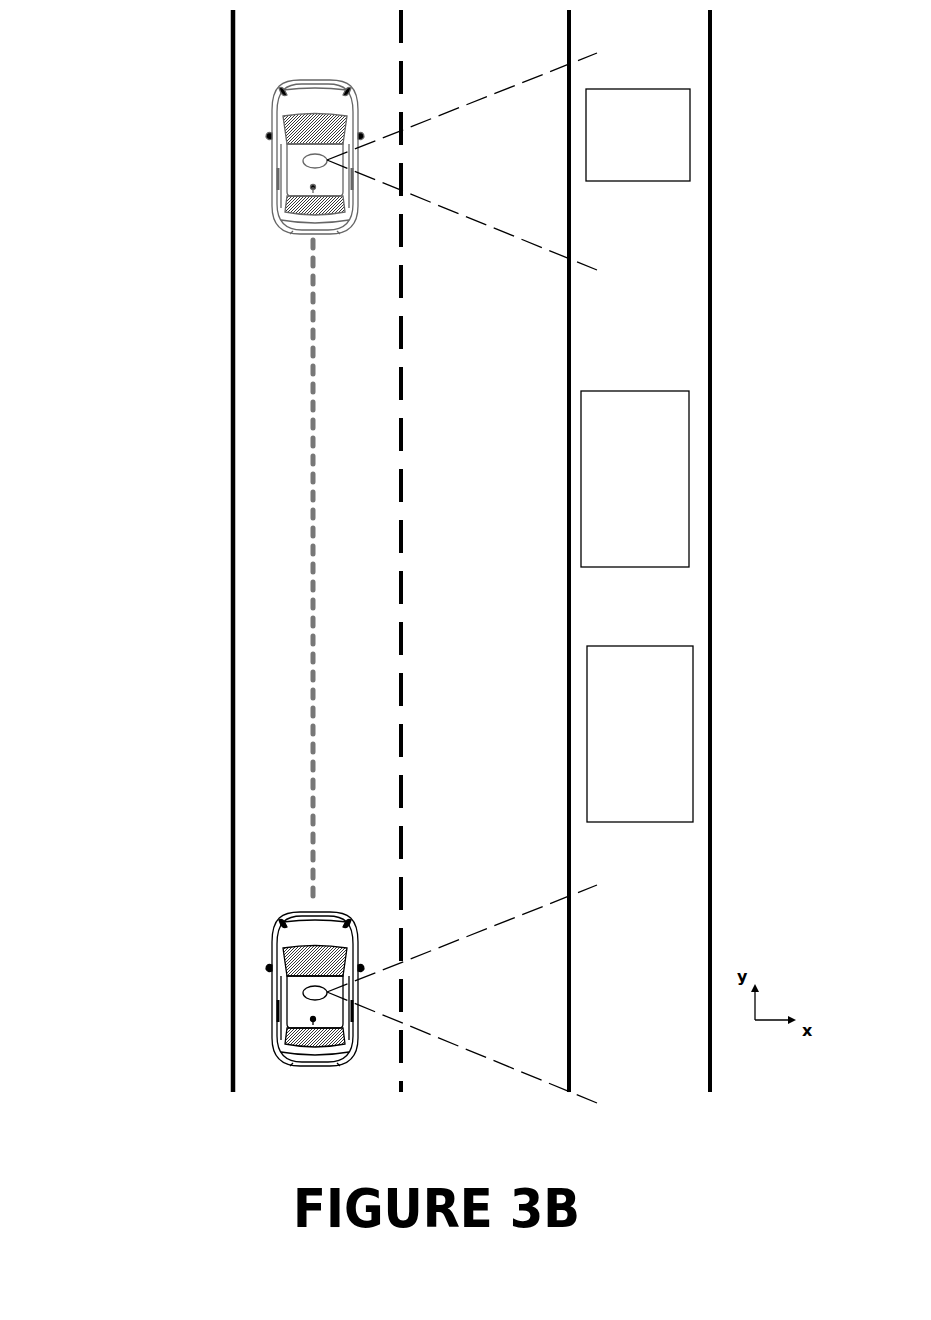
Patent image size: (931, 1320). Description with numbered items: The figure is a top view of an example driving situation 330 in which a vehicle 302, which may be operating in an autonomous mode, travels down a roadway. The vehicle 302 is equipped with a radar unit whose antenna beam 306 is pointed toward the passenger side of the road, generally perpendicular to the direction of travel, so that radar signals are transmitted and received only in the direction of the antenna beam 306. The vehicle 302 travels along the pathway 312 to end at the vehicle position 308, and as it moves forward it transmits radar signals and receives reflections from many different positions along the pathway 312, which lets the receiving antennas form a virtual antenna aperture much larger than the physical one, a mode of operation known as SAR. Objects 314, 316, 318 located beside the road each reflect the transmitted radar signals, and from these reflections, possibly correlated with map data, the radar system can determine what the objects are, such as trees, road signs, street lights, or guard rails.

The vehicle 302 is at (272, 1032).
The antenna beam 306 is at (449, 942).
The vehicle position 308 is at (277, 135).
The pathway 312 is at (312, 309).
The object 314 is at (628, 646).
The object 316 is at (626, 391).
The object 318 is at (586, 110).
The driving situation 330 is at (94, 233).